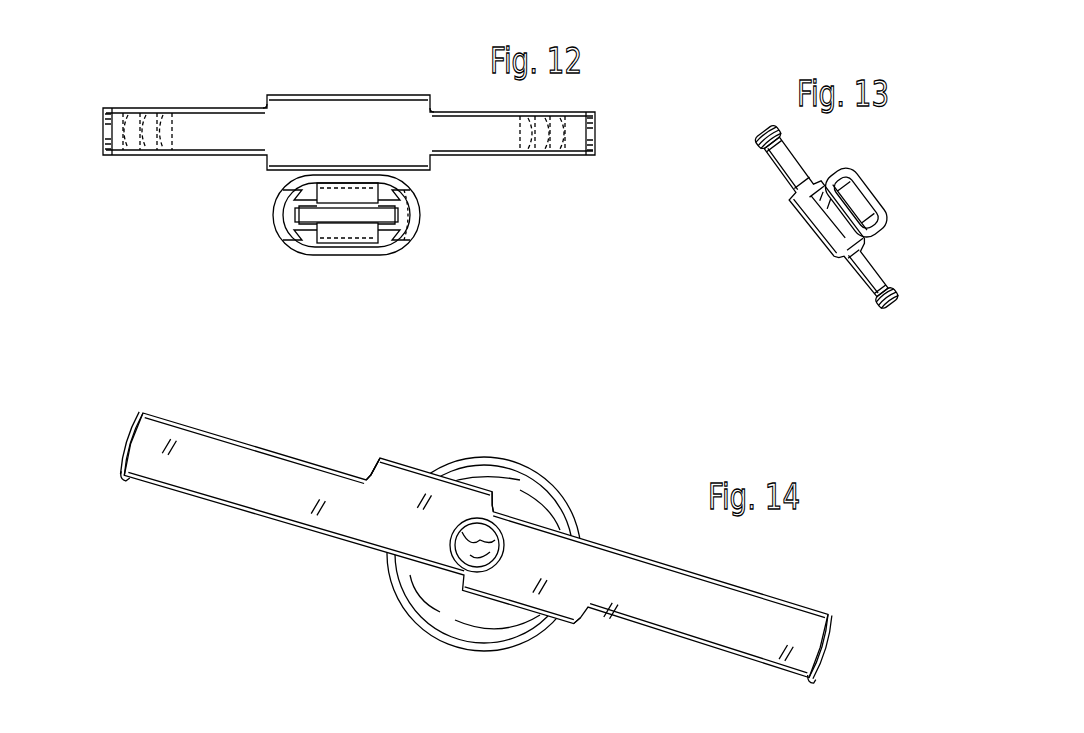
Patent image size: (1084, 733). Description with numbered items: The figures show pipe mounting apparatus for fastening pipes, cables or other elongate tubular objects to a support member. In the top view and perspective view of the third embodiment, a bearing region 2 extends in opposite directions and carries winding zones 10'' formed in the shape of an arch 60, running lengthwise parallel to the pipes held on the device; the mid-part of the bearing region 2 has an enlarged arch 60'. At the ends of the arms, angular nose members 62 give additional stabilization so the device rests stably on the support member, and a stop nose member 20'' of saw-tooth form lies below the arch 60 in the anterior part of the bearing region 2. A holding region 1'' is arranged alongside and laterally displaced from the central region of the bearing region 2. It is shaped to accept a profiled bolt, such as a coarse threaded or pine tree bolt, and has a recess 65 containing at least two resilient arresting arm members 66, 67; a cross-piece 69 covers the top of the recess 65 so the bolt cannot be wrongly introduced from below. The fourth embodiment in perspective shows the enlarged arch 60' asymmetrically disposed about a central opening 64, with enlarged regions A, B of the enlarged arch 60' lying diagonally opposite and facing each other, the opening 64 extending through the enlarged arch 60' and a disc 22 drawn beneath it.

In FIG. 12, the bearing region 2 is at (267, 89).
In FIG. 14, the bearing region 2 is at (370, 455).
In FIG. 12, the winding zone 10'' is at (349, 126).
In FIG. 13, the winding zone 10'' is at (820, 230).
In FIG. 14, the winding zone 10'' is at (487, 542).
In FIG. 12, the arch 60 is at (349, 131).
In FIG. 14, the arch 60 is at (477, 528).
In FIG. 12, the enlarged arch 60' is at (348, 107).
In FIG. 14, the enlarged arch 60' is at (469, 540).
In FIG. 12, the angular nose member 62 is at (208, 118).
In FIG. 13, the angular nose member 62 is at (770, 135).
In FIG. 14, the angular nose member 62 is at (133, 482).
In FIG. 14, the central opening 64 is at (487, 557).
In FIG. 12, the recess 65 is at (290, 193).
In FIG. 12, the resilient arresting arm member 66 is at (375, 192).
In FIG. 12, the resilient arresting arm member 67 is at (340, 242).
In FIG. 12, the cross-piece 69 is at (308, 221).
In FIG. 12, the holding region 1'' is at (366, 236).
In FIG. 13, the holding region 1'' is at (874, 191).
In FIG. 13, the stop nose member 20'' is at (808, 238).
In FIG. 14, the disc 22 is at (510, 632).
In FIG. 14, the enlarged region A is at (400, 472).
In FIG. 14, the enlarged region B is at (568, 603).